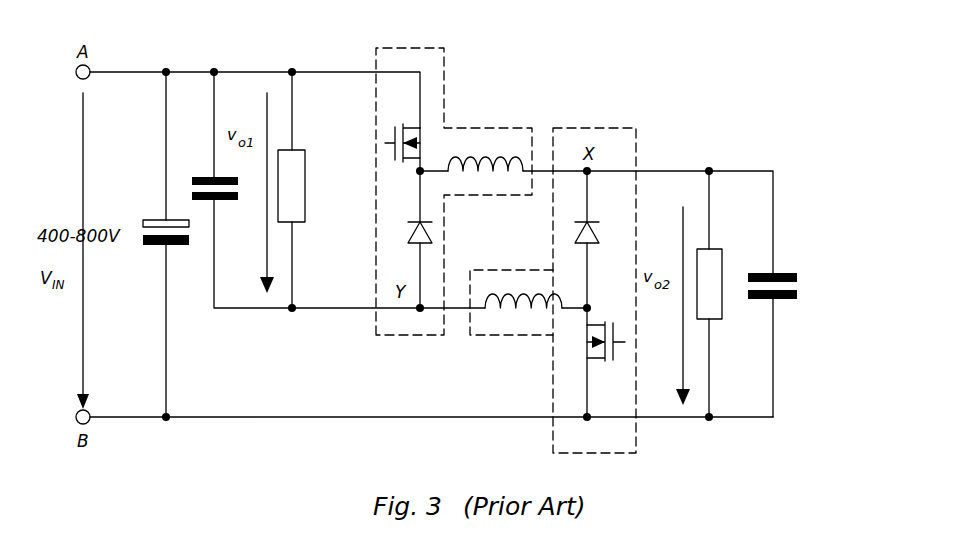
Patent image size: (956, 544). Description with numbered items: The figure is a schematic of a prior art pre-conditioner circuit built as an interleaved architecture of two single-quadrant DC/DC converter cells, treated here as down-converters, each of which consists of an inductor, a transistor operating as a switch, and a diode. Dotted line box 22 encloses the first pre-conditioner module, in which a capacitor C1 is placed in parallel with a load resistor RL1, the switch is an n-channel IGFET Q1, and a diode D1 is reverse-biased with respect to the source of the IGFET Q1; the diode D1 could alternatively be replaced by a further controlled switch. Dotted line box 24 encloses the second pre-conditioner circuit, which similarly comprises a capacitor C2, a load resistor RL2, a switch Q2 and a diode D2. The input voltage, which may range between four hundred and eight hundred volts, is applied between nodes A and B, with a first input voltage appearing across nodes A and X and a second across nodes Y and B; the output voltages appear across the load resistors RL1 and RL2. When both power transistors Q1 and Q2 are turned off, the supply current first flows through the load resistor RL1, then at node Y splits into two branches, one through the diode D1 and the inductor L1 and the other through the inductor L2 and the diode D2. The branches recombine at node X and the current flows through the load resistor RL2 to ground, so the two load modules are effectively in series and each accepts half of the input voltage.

The dotted line box 22 is at (446, 63).
The dotted line box 24 is at (637, 433).
The capacitor C1 is at (206, 177).
The capacitor C2 is at (782, 300).
The n-channel IGFET switch Q1 is at (420, 135).
The switch Q2 is at (593, 357).
The diode D1 is at (406, 232).
The diode D2 is at (573, 232).
The inductor L1 is at (493, 158).
The inductor L2 is at (518, 312).
The load resistor RL1 is at (298, 181).
The load resistor RL2 is at (707, 265).